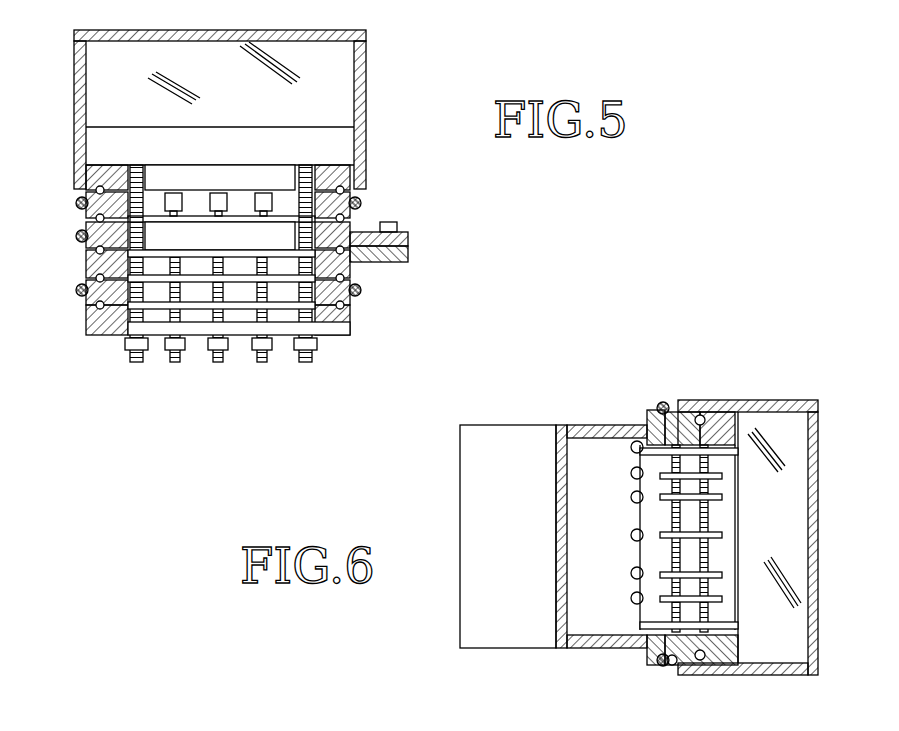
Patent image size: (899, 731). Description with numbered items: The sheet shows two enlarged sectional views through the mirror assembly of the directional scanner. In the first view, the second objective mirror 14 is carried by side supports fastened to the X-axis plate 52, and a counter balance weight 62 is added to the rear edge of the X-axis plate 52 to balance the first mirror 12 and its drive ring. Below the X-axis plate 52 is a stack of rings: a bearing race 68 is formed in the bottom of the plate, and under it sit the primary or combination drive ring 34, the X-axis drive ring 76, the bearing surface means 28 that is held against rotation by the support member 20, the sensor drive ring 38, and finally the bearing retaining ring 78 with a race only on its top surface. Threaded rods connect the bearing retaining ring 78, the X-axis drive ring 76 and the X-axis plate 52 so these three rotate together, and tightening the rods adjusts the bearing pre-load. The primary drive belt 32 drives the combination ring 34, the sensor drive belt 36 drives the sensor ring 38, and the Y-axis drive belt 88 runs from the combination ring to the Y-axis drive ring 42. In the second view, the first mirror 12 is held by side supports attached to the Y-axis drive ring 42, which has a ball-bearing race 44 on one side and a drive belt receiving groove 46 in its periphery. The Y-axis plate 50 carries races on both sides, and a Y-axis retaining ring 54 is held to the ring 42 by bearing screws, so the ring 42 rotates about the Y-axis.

In FIG. 6, the first objective mirror 12 is at (512, 560).
In FIG. 5, the second objective mirror 14 is at (358, 66).
In FIG. 6, the second objective mirror 14 is at (790, 420).
In FIG. 5, the support member 20 is at (408, 255).
In FIG. 5, the bearing surface means 28 is at (86, 262).
In FIG. 5, the primary drive belt 32 is at (355, 197).
In FIG. 5, the primary drive ring 34 is at (80, 204).
In FIG. 5, the sensor drive belt 36 is at (360, 288).
In FIG. 5, the sensor drive ring 38 is at (356, 298).
In FIG. 6, the Y-axis drive ring 42 is at (652, 420).
In FIG. 6, the ball-bearing race 44 is at (684, 414).
In FIG. 6, the drive belt receiving groove 46 is at (663, 404).
In FIG. 6, the Y-axis plate 50 is at (704, 424).
In FIG. 5, the X-axis plate 52 is at (348, 175).
In FIG. 6, the Y-axis retaining ring 54 is at (740, 414).
In FIG. 5, the counter balance weight 62 is at (345, 138).
In FIG. 5, the bearing race 68 is at (86, 188).
In FIG. 5, the X-axis drive ring 76 is at (86, 240).
In FIG. 5, the bearing retaining ring 78 is at (348, 334).
In FIG. 5, the Y-axis drive belt 88 is at (360, 208).
In FIG. 6, the Y-axis drive belt 88 is at (663, 666).